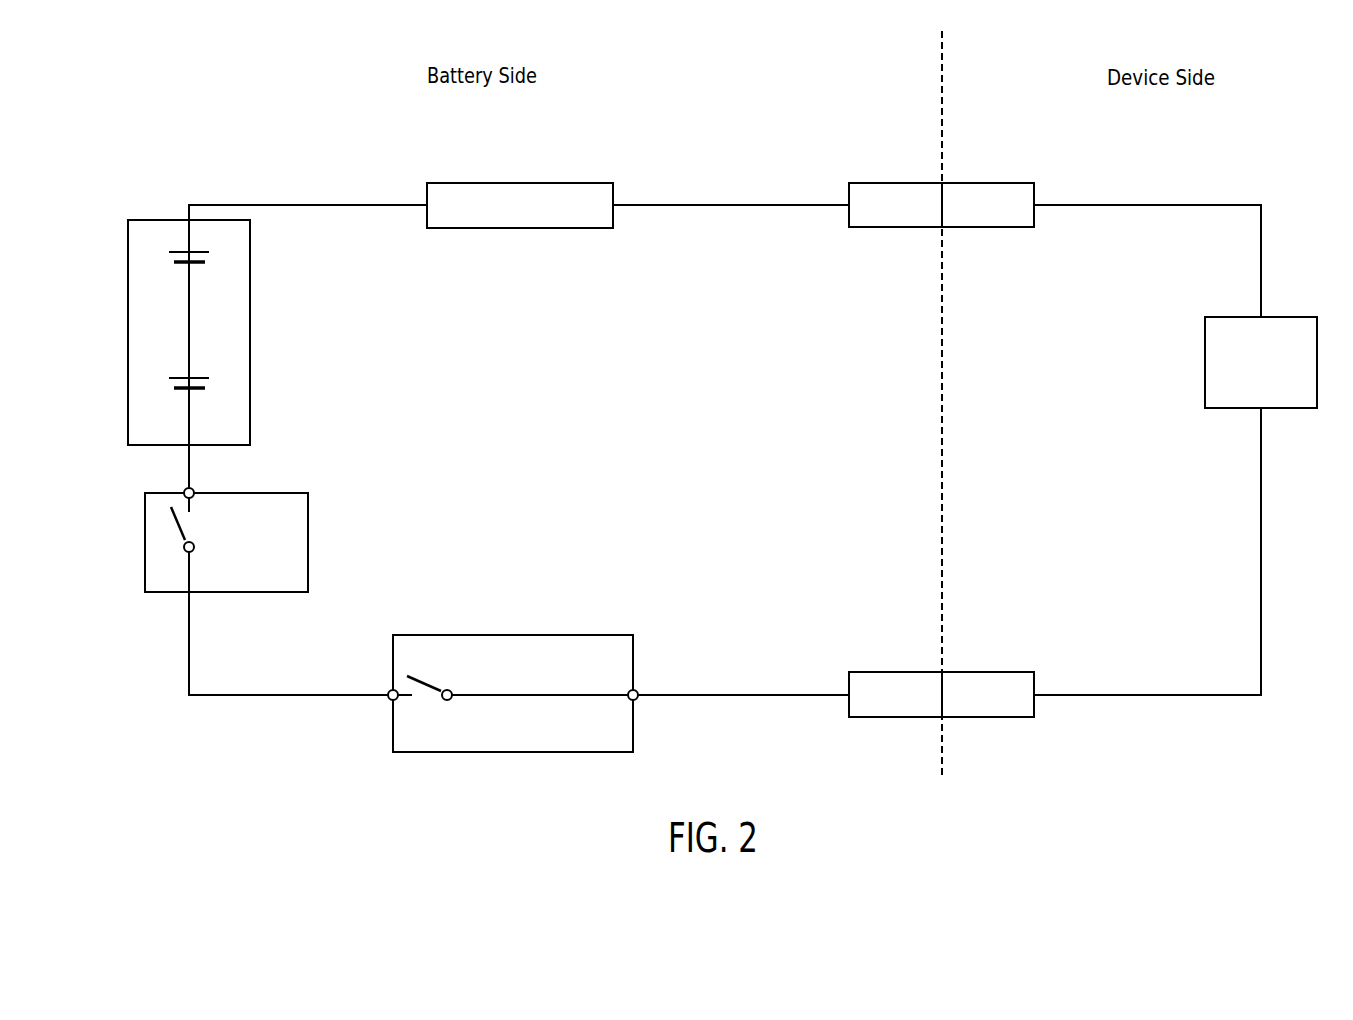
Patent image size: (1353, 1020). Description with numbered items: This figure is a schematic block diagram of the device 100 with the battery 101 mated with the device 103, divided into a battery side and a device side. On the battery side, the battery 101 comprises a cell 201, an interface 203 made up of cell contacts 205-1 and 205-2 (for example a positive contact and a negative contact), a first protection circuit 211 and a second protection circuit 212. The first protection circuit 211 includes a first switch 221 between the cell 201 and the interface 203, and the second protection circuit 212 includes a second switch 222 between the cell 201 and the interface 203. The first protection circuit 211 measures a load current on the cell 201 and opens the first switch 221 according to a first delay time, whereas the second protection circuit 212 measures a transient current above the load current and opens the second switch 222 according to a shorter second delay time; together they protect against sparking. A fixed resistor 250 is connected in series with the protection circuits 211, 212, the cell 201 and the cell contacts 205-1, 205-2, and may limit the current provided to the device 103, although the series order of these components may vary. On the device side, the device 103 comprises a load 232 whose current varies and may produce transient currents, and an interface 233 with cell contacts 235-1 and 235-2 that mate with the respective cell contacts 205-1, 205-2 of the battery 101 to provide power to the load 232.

The device 100 is at (137, 57).
The battery 101 is at (193, 143).
The device 103 is at (1266, 145).
The cell 201 is at (128, 334).
The interface 203 is at (924, 124).
The cell contact 205-1 is at (897, 183).
The cell contact 205-2 is at (897, 672).
The first protection circuit 211 is at (289, 493).
The second protection circuit 212 is at (513, 635).
The first switch 221 is at (172, 520).
The second switch 222 is at (408, 676).
The load 232 is at (1205, 363).
The interface 233 is at (963, 124).
The cell contact 235-1 is at (1006, 183).
The cell contact 235-2 is at (1006, 672).
The fixed resistor 250 is at (519, 183).